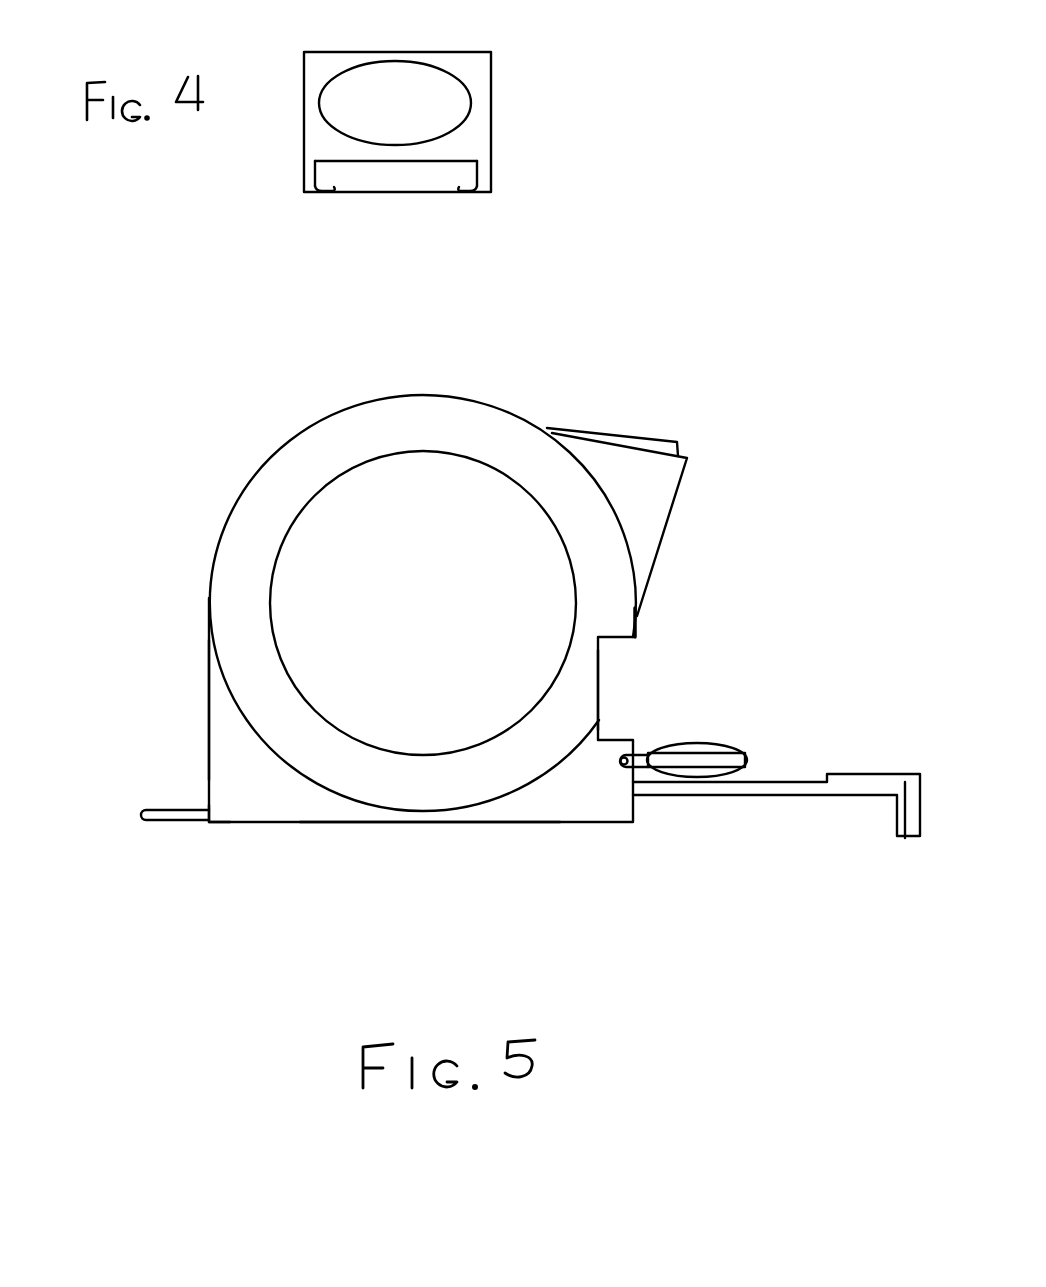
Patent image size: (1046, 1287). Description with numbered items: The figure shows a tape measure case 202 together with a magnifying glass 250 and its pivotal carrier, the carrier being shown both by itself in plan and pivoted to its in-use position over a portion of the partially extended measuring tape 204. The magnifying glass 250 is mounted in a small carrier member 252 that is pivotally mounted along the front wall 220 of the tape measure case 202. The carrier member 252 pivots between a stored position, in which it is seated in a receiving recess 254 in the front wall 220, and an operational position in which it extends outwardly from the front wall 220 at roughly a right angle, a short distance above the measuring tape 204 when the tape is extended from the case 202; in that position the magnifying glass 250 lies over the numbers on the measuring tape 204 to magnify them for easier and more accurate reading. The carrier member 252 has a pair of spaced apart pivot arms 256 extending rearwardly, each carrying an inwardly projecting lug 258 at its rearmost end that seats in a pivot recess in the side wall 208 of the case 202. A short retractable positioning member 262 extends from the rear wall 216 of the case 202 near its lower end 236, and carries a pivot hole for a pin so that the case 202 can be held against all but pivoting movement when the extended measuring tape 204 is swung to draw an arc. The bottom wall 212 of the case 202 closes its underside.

In FIG. 5, the tape measure case 202 is at (282, 807).
In FIG. 5, the measuring tape 204 is at (807, 797).
In FIG. 5, the side wall 208 is at (417, 783).
In FIG. 5, the bottom wall 212 is at (507, 825).
In FIG. 5, the rear wall 216 is at (208, 678).
In FIG. 5, the front wall 220 is at (636, 618).
In FIG. 5, the lower end 236 is at (205, 822).
In FIG. 4, the magnifying glass 250 is at (404, 90).
In FIG. 5, the magnifying glass 250 is at (707, 745).
In FIG. 4, the carrier member 252 is at (491, 128).
In FIG. 5, the carrier member 252 is at (745, 760).
In FIG. 5, the receiving recess 254 is at (617, 685).
In FIG. 4, the pivot arms 256 is at (491, 180).
In FIG. 5, the pivot arms 256 is at (647, 768).
In FIG. 4, the lugs 258 is at (320, 195).
In FIG. 5, the positioning member 262 is at (178, 810).